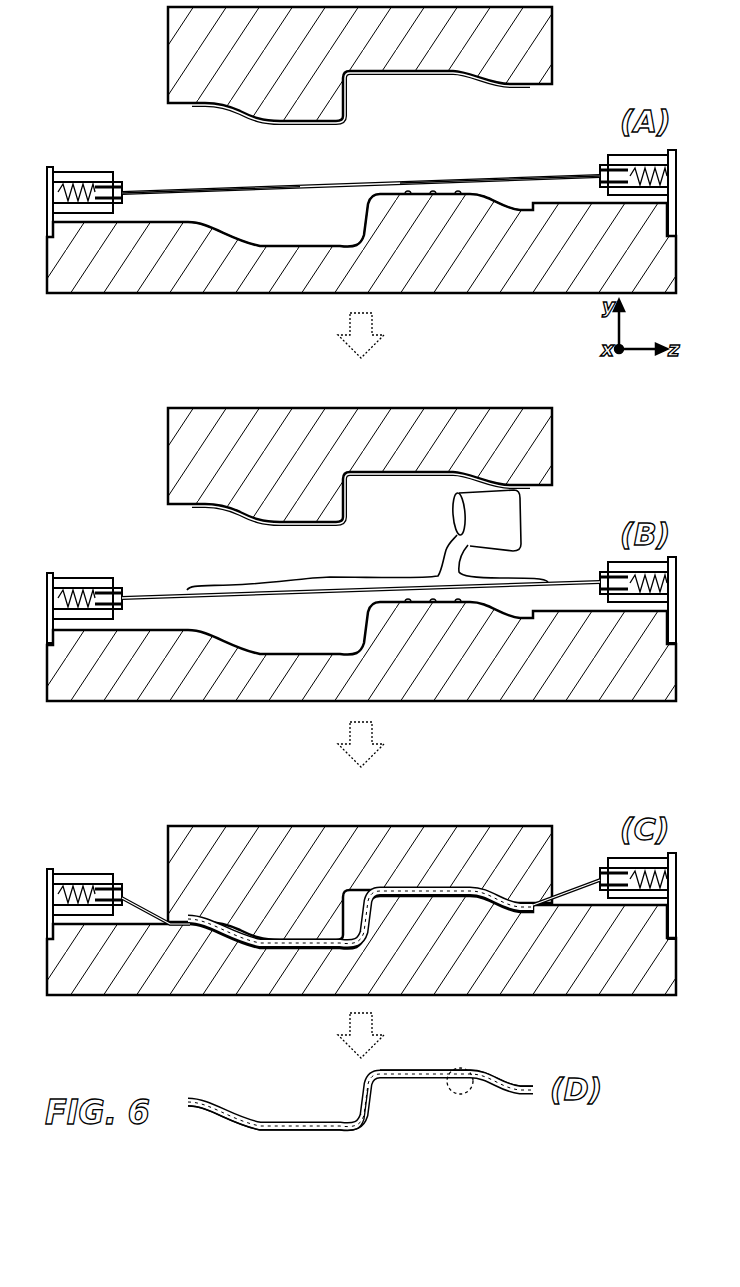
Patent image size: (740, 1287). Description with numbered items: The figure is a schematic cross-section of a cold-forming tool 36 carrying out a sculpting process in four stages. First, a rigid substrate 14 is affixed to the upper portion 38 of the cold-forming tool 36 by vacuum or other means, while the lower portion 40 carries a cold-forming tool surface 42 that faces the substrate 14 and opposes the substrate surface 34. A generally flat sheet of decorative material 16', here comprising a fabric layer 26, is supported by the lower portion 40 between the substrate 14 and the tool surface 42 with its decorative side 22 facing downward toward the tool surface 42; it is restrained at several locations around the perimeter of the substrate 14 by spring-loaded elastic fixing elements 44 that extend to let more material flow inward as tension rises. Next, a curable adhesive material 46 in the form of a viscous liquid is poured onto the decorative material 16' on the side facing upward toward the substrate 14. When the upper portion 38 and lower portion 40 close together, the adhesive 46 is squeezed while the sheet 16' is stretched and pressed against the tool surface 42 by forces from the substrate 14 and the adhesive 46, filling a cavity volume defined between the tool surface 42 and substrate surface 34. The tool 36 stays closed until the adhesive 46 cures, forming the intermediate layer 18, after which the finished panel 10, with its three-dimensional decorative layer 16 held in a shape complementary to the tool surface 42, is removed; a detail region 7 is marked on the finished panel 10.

The detail region 7 is at (471, 1069).
The panel 10 is at (360, 1094).
The substrate 14 is at (402, 71).
The decorative layer 16 is at (298, 1119).
The sheet of decorative material 16' is at (500, 158).
The intermediate layer 18 is at (346, 1106).
The decorative side 22 is at (258, 190).
The fabric layer 26 is at (361, 181).
The substrate surface 34 is at (253, 115).
The cold-forming tool 36 is at (384, 73).
The upper portion 38 is at (168, 32).
The lower portion 40 is at (361, 264).
The cold-forming tool surface 42 is at (362, 218).
The elastic fixing element 44 is at (70, 167).
The curable adhesive material 46 is at (390, 580).